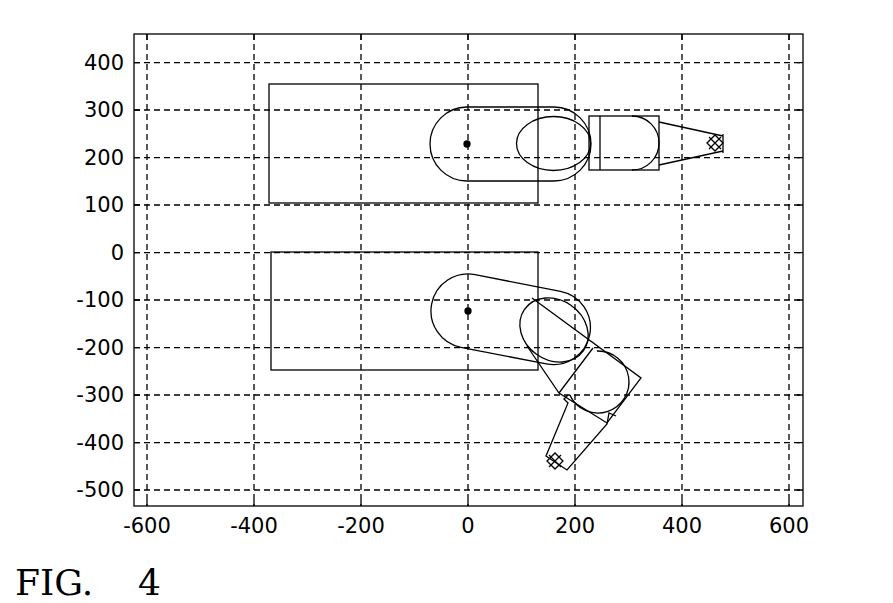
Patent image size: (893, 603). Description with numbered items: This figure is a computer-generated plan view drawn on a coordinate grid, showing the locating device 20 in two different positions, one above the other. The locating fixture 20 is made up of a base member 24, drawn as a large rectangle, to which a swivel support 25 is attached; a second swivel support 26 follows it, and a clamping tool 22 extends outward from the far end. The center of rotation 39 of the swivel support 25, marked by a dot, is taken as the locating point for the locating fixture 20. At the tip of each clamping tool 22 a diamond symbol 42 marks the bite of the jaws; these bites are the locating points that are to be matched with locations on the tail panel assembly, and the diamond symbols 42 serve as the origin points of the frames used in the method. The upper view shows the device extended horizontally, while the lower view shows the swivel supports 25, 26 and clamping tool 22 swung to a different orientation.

The locating fixture 20 is at (252, 137).
The clamping tool 22 is at (686, 122).
The base member 24 is at (282, 180).
The swivel support 25 is at (544, 110).
The swivel support 26 is at (573, 135).
The center of rotation 39 is at (467, 144).
The diamond symbol 42 is at (722, 141).